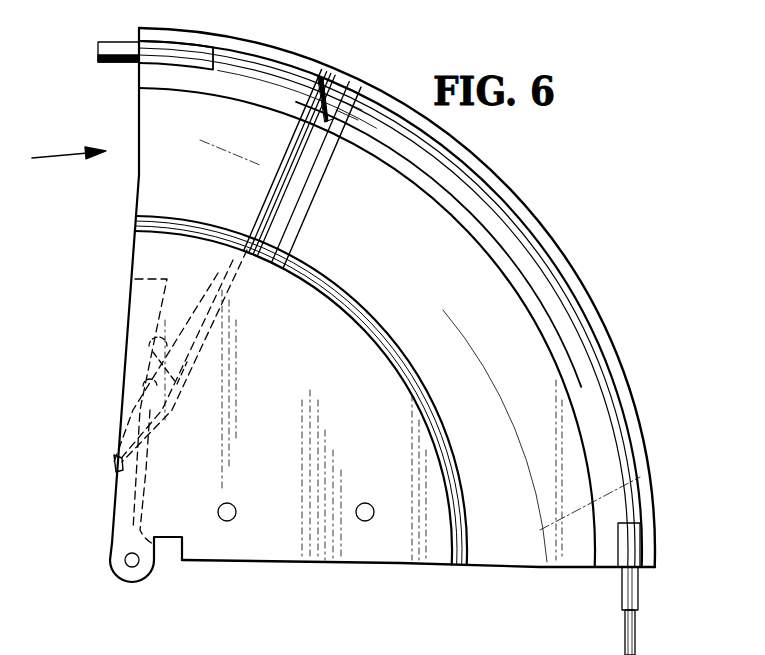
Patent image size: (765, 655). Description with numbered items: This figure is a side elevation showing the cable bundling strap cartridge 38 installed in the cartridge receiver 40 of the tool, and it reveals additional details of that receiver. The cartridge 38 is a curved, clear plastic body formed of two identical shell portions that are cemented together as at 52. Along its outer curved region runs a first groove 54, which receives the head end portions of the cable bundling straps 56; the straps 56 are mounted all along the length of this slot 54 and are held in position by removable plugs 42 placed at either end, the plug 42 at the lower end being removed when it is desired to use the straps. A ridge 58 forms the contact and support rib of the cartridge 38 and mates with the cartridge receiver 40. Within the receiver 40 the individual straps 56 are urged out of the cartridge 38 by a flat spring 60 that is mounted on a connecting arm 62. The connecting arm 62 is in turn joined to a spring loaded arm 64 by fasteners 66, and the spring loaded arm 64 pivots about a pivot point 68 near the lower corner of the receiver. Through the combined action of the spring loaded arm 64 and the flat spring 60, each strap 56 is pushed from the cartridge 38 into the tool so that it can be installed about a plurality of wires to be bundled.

The cable bundling strap cartridge 38 is at (552, 227).
The cartridge receiver 40 is at (297, 452).
The removable plug 42 is at (103, 42).
The cemented joint 52 is at (517, 568).
The first groove 54 is at (575, 320).
The cable bundling straps 56 is at (327, 192).
The ridge 58 is at (452, 453).
The flat spring 60 is at (334, 78).
The connecting arm 62 is at (318, 76).
The spring loaded arm 64 is at (148, 438).
The fasteners 66 is at (117, 462).
The pivot point 68 is at (126, 562).